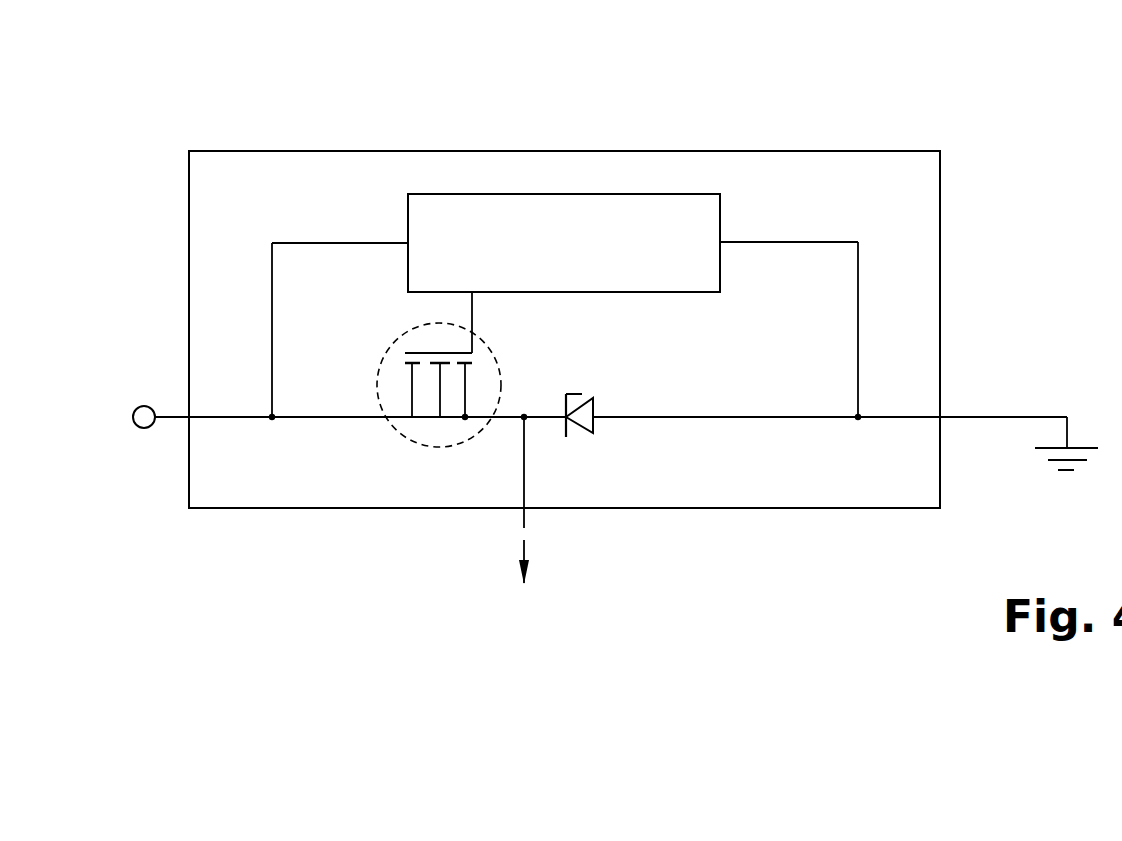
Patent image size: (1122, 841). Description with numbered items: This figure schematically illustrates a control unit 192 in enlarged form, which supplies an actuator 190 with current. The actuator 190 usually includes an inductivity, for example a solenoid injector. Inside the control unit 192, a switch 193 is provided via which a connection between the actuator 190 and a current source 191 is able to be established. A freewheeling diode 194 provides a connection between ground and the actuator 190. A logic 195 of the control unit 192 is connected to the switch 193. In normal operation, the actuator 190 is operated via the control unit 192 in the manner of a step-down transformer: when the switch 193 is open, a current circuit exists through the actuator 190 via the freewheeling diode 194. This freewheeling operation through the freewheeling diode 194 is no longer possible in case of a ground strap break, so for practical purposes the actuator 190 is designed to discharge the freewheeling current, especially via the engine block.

The actuator 190 is at (525, 548).
The current source 191 is at (133, 420).
The control unit 192 is at (928, 122).
The switch 193 is at (393, 342).
The freewheeling diode 194 is at (596, 384).
The logic 195 is at (563, 194).